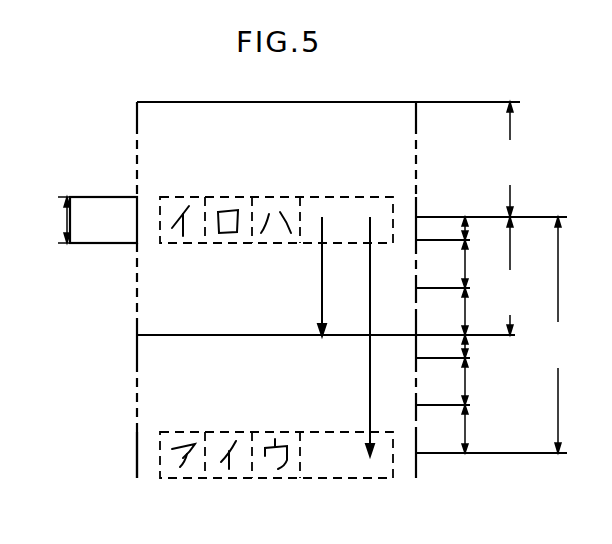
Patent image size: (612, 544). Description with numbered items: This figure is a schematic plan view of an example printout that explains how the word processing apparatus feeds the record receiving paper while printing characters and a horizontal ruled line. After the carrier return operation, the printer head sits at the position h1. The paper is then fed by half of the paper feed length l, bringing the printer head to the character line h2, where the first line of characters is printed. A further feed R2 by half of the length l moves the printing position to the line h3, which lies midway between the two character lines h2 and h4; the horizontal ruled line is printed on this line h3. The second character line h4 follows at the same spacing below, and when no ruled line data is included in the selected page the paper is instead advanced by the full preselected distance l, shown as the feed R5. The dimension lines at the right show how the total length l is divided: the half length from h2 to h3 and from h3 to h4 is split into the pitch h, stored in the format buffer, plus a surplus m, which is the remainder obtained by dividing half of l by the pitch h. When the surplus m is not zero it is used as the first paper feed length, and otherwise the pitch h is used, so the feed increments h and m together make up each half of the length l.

The printer head position h1 is at (309, 106).
The character line h2 is at (103, 220).
The horizontal ruled line position h3 is at (306, 337).
The character line h4 is at (117, 455).
The paper feed by length l/2 R2 is at (334, 276).
The paper feed by length l R5 is at (382, 336).
The pitch h is at (264, 325).
The surplus m is at (477, 287).
The paper feed length l is at (519, 162).